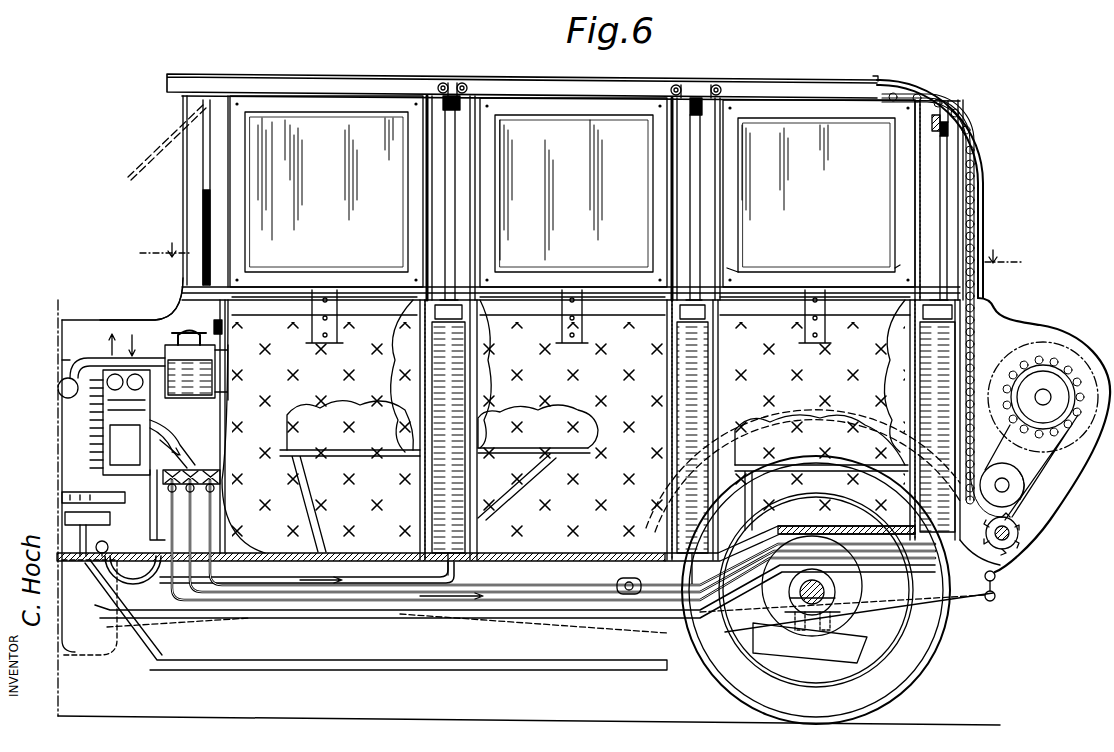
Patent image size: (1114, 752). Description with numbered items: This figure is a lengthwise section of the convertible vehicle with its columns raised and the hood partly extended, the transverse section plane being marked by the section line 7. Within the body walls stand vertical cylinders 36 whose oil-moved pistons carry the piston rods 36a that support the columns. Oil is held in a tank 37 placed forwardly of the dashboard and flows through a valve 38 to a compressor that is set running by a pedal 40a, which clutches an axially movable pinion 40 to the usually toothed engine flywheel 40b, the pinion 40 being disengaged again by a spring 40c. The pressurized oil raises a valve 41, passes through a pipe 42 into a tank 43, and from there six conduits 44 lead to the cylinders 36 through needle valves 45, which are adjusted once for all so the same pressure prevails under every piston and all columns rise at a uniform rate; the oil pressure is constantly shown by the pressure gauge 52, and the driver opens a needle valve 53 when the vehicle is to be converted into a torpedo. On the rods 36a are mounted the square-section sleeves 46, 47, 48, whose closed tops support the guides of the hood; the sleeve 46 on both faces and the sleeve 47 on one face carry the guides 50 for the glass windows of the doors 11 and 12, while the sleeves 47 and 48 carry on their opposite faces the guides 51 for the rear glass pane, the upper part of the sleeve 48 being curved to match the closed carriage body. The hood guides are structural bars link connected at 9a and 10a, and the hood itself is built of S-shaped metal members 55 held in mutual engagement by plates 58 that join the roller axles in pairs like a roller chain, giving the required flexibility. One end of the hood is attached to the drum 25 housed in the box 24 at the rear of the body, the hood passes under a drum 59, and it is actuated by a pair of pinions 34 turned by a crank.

The section line 7- 7 is at (581, 249).
The link connection 9a is at (714, 85).
The link connection 10a is at (463, 83).
The door 11 is at (538, 381).
The door 12 is at (350, 300).
The box 24 is at (1030, 327).
The drum 25 is at (1025, 372).
The pinions 34 is at (1027, 543).
The cylinders 36 is at (425, 538).
The piston rods 36a is at (453, 232).
The tank 37 is at (216, 385).
The valve 38 is at (135, 365).
The pinion 40 is at (97, 475).
The pedal 40a is at (213, 525).
The engine flywheel 40b is at (65, 540).
The spring 40c is at (68, 493).
The valve 41 is at (98, 362).
The pipe 42 is at (179, 439).
The tank 43 is at (215, 478).
The conduits 44 is at (420, 588).
The needle valves 45 is at (207, 468).
The sleeve 46 is at (425, 185).
The sleeve 47 is at (672, 185).
The sleeve 48 is at (917, 187).
The guides 50 is at (418, 148).
The guides 51 is at (727, 268).
The pressure gauge 52 is at (222, 325).
The needle valve 53 is at (200, 345).
The metal members 55 is at (970, 122).
The plates 58 is at (982, 188).
The drum 59 is at (1003, 470).